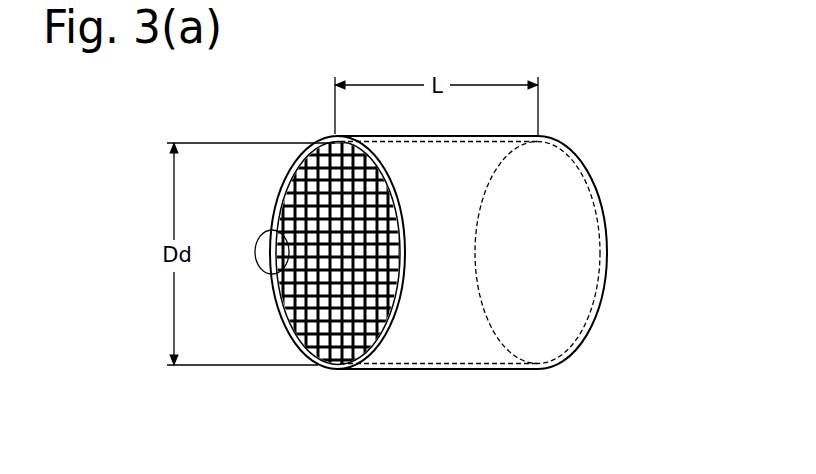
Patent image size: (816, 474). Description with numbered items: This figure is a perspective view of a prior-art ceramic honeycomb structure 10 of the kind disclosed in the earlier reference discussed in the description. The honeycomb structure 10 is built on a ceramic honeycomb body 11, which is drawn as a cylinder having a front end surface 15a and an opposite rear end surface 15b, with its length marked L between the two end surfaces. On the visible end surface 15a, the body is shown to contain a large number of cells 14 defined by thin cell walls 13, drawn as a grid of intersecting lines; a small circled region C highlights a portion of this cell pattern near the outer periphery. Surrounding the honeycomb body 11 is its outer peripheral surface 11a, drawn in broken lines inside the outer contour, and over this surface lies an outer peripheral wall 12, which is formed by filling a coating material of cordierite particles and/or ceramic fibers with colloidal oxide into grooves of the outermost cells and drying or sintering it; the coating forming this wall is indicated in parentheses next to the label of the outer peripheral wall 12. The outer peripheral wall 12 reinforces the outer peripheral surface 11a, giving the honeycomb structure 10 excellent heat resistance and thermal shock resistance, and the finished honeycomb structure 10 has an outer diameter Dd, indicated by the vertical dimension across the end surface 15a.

The honeycomb structure 10 is at (631, 127).
The ceramic honeycomb body 11 is at (457, 338).
The outer peripheral surface 11a is at (410, 364).
The outer peripheral wall 12 is at (512, 369).
The cell walls 13 is at (317, 348).
The cells 14 is at (347, 338).
The end surface 15a is at (292, 334).
The end surface 15b is at (605, 288).
The cell C is at (258, 251).